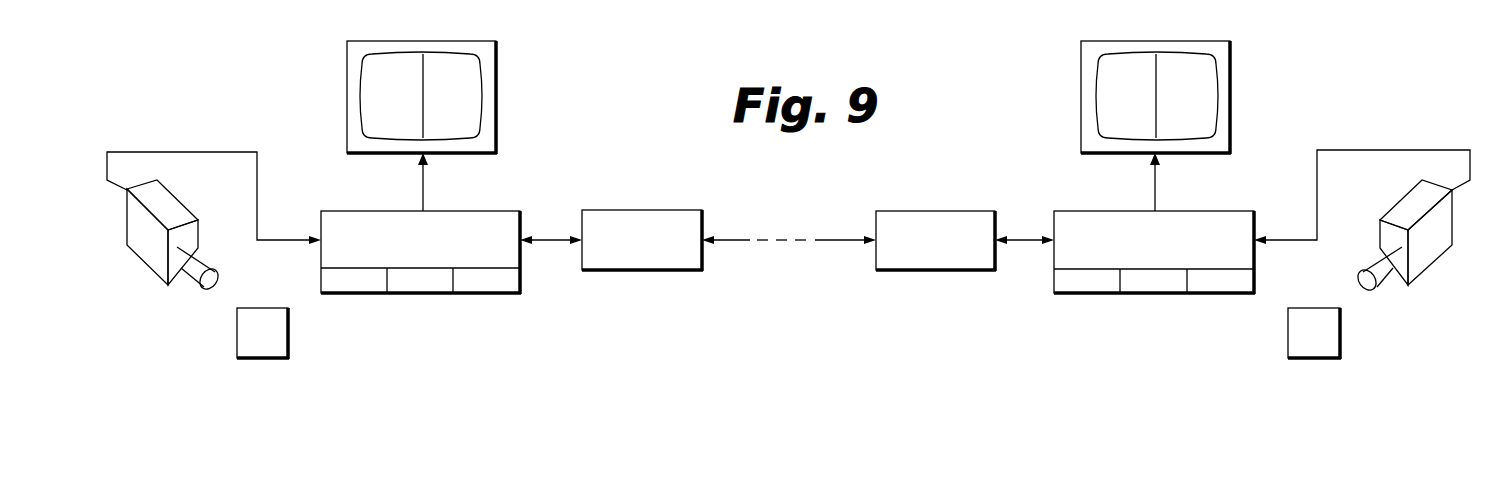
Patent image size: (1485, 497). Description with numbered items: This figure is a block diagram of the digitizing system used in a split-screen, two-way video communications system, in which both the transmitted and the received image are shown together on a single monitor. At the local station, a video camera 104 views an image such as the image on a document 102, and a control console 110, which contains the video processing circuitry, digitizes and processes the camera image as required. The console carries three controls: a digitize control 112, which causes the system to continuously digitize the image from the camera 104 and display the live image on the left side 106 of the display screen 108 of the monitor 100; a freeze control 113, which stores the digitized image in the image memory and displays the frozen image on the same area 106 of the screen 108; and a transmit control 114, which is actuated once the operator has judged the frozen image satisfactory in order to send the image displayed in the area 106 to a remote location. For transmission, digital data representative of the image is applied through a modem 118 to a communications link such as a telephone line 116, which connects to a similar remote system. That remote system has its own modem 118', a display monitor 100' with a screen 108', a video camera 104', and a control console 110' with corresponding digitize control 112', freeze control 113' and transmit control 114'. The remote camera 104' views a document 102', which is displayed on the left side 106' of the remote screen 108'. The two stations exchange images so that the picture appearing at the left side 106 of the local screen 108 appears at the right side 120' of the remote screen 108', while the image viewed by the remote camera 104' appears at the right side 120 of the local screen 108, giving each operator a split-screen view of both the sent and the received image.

The monitor 100 is at (446, 79).
The left side of display screen 106 is at (383, 96).
The display screen 108 is at (424, 70).
The right side of screen 120 is at (498, 84).
The control console 110 is at (421, 262).
The digitize control 112 is at (356, 299).
The freeze control 113 is at (419, 305).
The transmit control 114 is at (489, 301).
The modem 118 is at (642, 228).
The telephone line 116 is at (743, 238).
The video camera 104 is at (167, 243).
The document 102 is at (233, 336).
The display monitor 100' is at (1189, 88).
The left side of screen 106' is at (1117, 96).
The screen 108' is at (1169, 72).
The right side of screen 120' is at (1238, 97).
The control console 110' is at (1147, 266).
The digitize control 112' is at (1080, 301).
The freeze control 113' is at (1146, 309).
The transmit control 114' is at (1214, 303).
The modem 118' is at (936, 228).
The video camera 104' is at (1408, 248).
The document 102' is at (1345, 333).